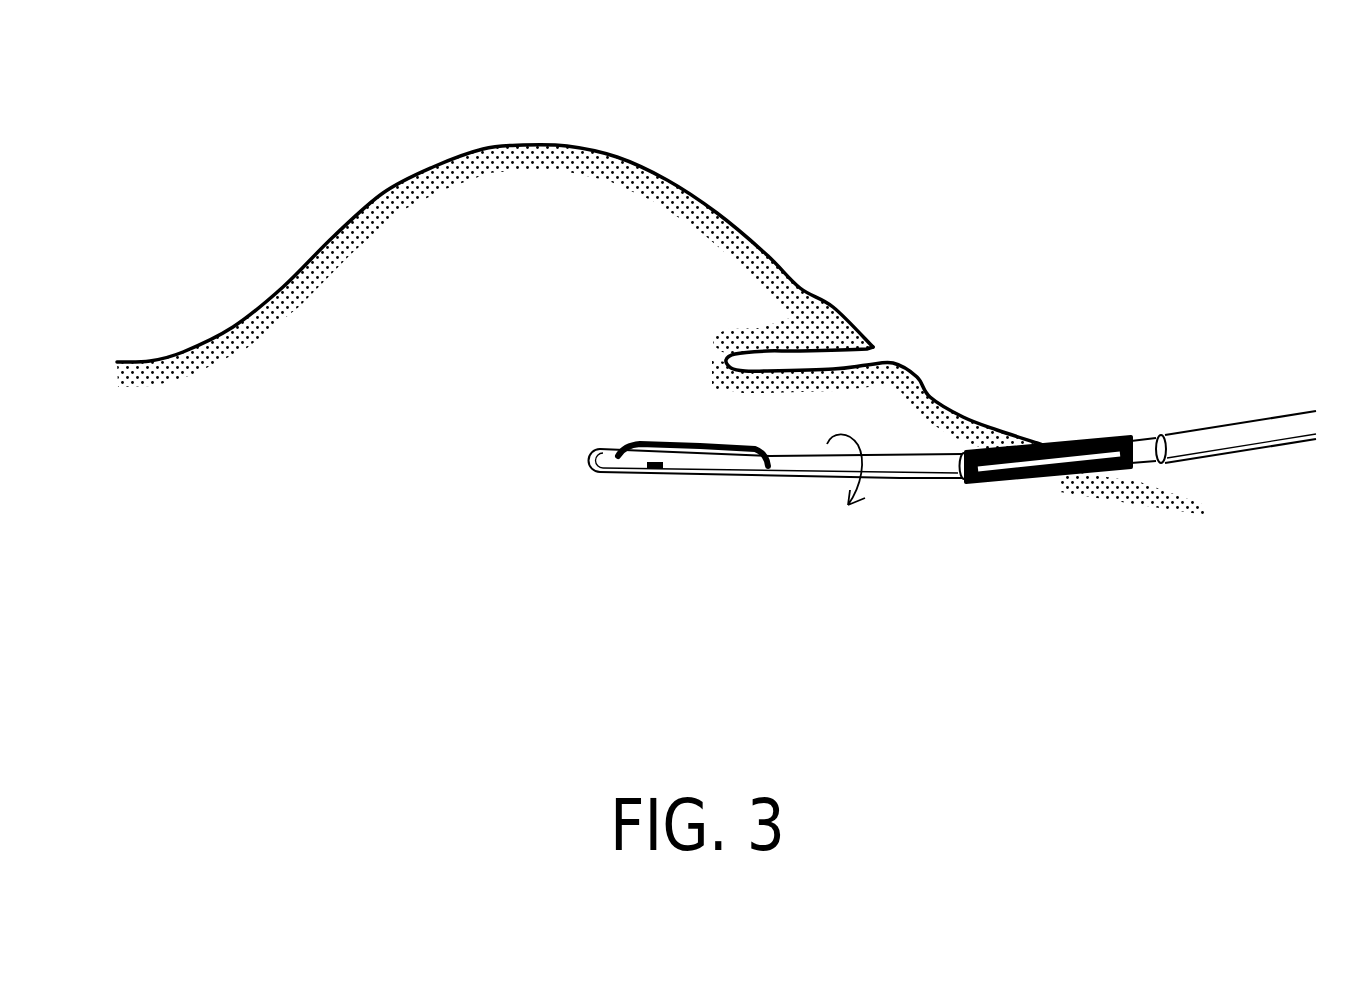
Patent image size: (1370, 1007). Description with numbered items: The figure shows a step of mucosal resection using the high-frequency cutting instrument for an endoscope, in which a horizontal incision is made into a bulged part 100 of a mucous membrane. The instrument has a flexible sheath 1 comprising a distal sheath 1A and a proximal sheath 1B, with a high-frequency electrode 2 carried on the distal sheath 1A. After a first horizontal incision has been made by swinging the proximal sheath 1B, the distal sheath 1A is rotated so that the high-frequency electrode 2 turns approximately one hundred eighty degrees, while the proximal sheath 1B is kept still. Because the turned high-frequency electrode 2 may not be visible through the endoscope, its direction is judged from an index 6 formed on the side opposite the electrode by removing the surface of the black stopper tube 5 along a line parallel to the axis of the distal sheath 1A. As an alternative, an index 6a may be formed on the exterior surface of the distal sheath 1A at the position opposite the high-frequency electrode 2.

The bulged part 100 is at (494, 147).
The flexible sheath 1 is at (961, 502).
The distal sheath 1A is at (902, 468).
The proximal sheath 1B is at (1255, 433).
The high-frequency electrode 2 is at (677, 443).
The stopper tube 5 is at (1073, 440).
The index 6 is at (1047, 465).
The index 6a is at (656, 470).